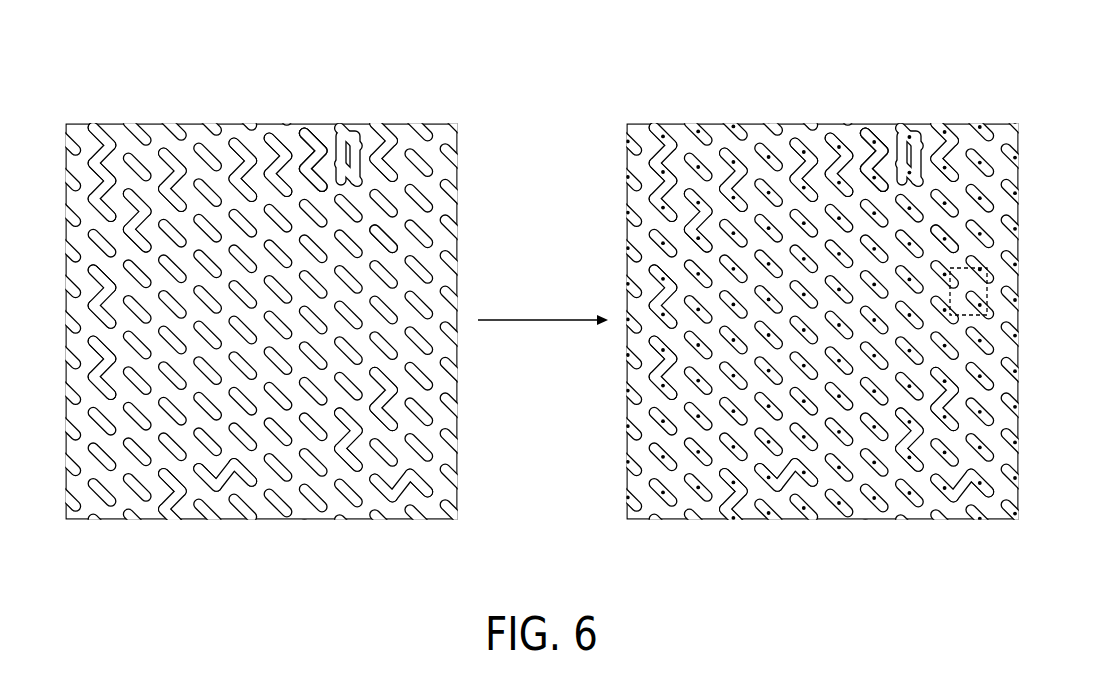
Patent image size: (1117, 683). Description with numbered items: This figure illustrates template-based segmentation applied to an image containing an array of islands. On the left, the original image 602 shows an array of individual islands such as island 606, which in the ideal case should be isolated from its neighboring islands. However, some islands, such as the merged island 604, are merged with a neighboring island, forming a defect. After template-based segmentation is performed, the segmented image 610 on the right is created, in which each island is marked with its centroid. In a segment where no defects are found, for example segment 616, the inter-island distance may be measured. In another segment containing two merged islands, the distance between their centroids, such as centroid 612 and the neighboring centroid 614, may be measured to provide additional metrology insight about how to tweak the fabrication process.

The original image 602 is at (150, 66).
The merged island 604 is at (316, 134).
The island 606 is at (390, 237).
The segmented image 610 is at (710, 66).
The centroid 612 is at (870, 176).
The slot with detected centroid 614 is at (947, 235).
The segment 616 is at (987, 292).